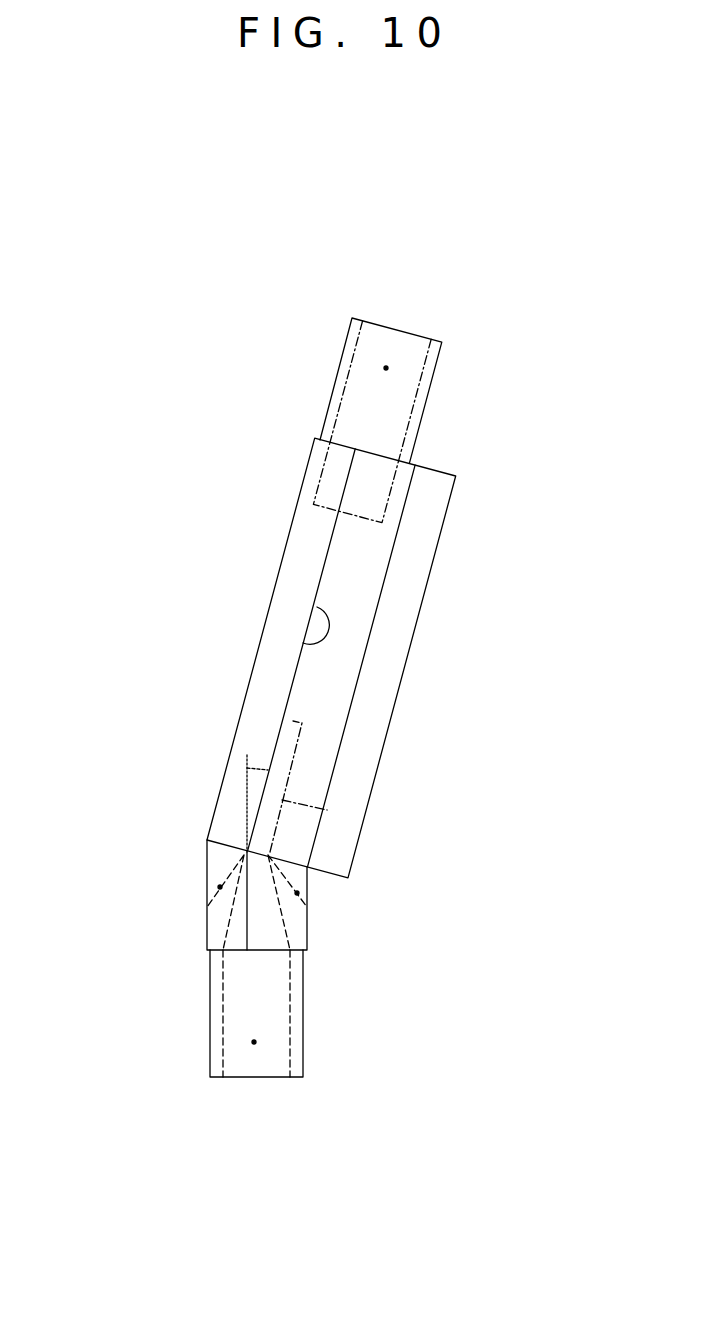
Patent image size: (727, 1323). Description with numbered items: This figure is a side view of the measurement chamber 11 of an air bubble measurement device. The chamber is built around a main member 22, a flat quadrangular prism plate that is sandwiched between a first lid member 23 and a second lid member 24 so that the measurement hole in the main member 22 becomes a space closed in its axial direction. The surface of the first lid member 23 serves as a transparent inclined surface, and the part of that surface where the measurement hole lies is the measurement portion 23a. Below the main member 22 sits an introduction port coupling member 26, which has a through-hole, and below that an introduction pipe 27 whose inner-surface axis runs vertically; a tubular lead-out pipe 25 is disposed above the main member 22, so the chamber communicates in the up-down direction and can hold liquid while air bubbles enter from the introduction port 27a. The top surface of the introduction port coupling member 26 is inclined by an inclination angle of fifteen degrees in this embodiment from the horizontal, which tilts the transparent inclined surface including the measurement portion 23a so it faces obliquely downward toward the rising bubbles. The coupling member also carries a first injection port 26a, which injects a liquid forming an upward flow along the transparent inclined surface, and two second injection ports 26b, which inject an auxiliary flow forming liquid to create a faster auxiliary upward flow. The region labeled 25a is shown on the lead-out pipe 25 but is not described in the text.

The measurement chamber 11 is at (490, 297).
The main member 22 is at (372, 567).
The first lid member 23 is at (300, 552).
The measurement portion 23a is at (303, 643).
The second lid member 24 is at (398, 623).
The lead-out pipe 25 is at (423, 402).
The shaft axis 25a is at (386, 368).
The introduction port coupling member 26 is at (257, 843).
The first injection port 26a is at (297, 893).
The second injection port 26b is at (220, 887).
The introduction pipe 27 is at (297, 1022).
The introduction port 27a is at (254, 1042).